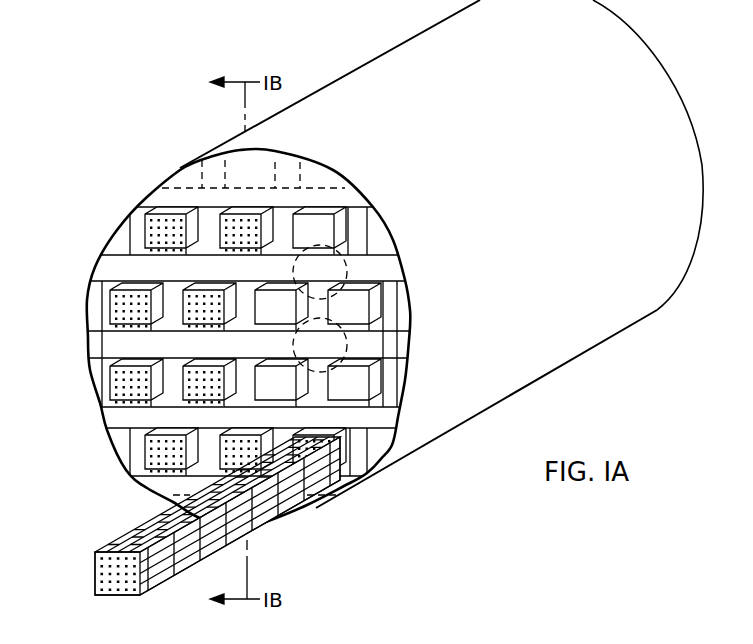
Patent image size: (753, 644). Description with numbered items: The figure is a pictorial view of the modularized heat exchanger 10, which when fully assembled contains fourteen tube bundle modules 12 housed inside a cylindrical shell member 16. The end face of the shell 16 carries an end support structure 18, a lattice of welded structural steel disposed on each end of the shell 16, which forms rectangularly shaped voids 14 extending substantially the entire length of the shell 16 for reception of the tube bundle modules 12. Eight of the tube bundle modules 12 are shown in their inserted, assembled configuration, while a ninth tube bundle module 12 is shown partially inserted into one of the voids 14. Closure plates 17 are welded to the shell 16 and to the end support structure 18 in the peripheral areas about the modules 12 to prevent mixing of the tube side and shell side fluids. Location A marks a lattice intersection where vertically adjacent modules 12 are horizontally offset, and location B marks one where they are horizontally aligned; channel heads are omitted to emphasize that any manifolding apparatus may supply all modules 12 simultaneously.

The modularized heat exchanger 10 is at (380, 45).
The tube bundle module 12 is at (253, 529).
The rectangularly shaped void 14 is at (353, 403).
The cylindrical shell member 16 is at (453, 392).
The closure plate 17 is at (317, 177).
The end support structure 18 is at (180, 340).
The location A is at (345, 265).
The location B is at (347, 348).